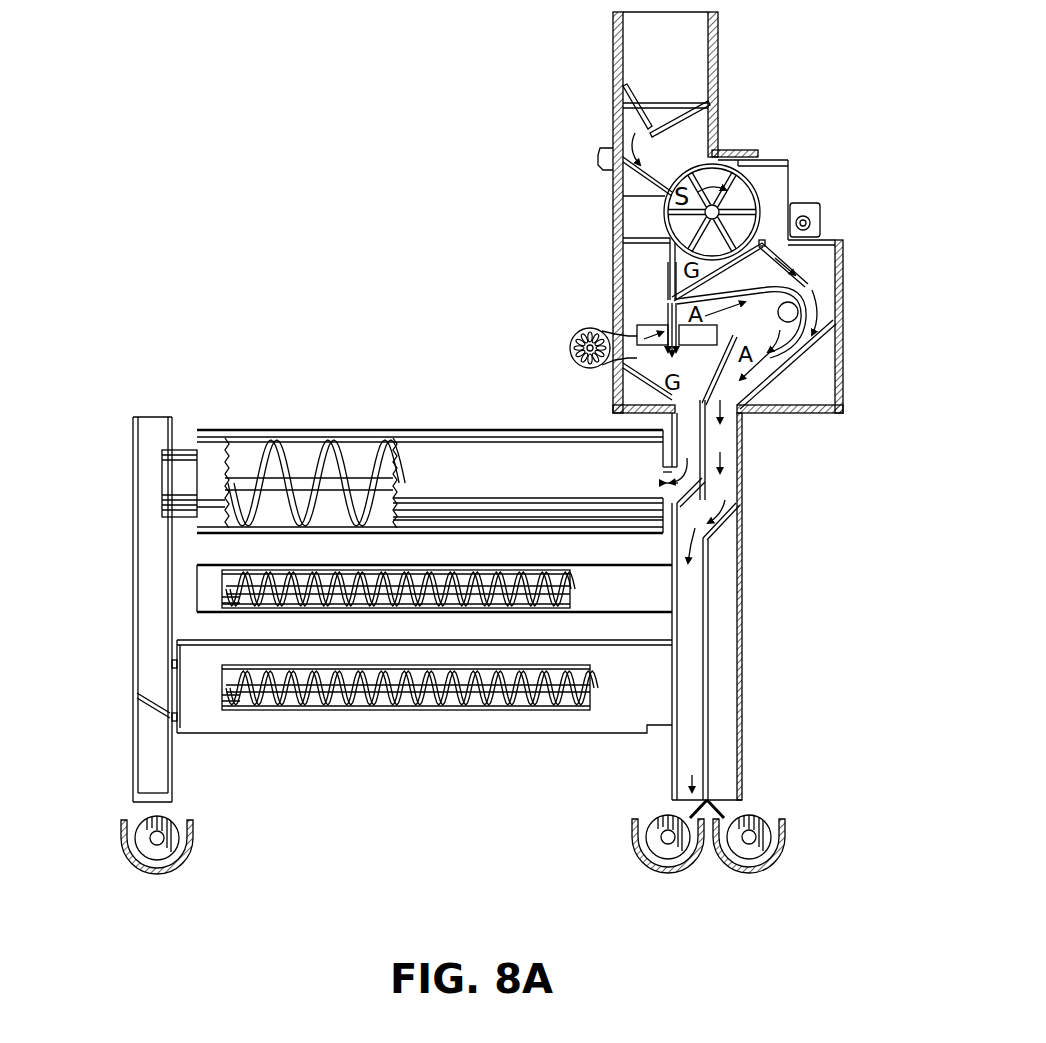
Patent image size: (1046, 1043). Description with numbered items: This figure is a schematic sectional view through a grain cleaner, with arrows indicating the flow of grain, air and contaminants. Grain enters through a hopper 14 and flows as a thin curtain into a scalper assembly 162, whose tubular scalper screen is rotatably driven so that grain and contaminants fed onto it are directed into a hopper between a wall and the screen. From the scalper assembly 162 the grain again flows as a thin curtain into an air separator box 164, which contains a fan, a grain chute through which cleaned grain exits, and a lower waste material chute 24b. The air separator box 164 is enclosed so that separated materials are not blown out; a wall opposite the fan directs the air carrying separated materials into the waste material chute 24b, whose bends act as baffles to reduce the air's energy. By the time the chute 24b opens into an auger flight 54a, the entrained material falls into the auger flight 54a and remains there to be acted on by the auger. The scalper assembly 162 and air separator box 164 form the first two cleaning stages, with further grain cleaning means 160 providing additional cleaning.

The hopper 14 is at (698, 44).
The scalper assembly 162 is at (760, 192).
The air separator box 164 is at (745, 333).
The further grain cleaning means 160 is at (120, 694).
The lower waste material chute 24b is at (676, 757).
The auger flight 54a is at (650, 821).